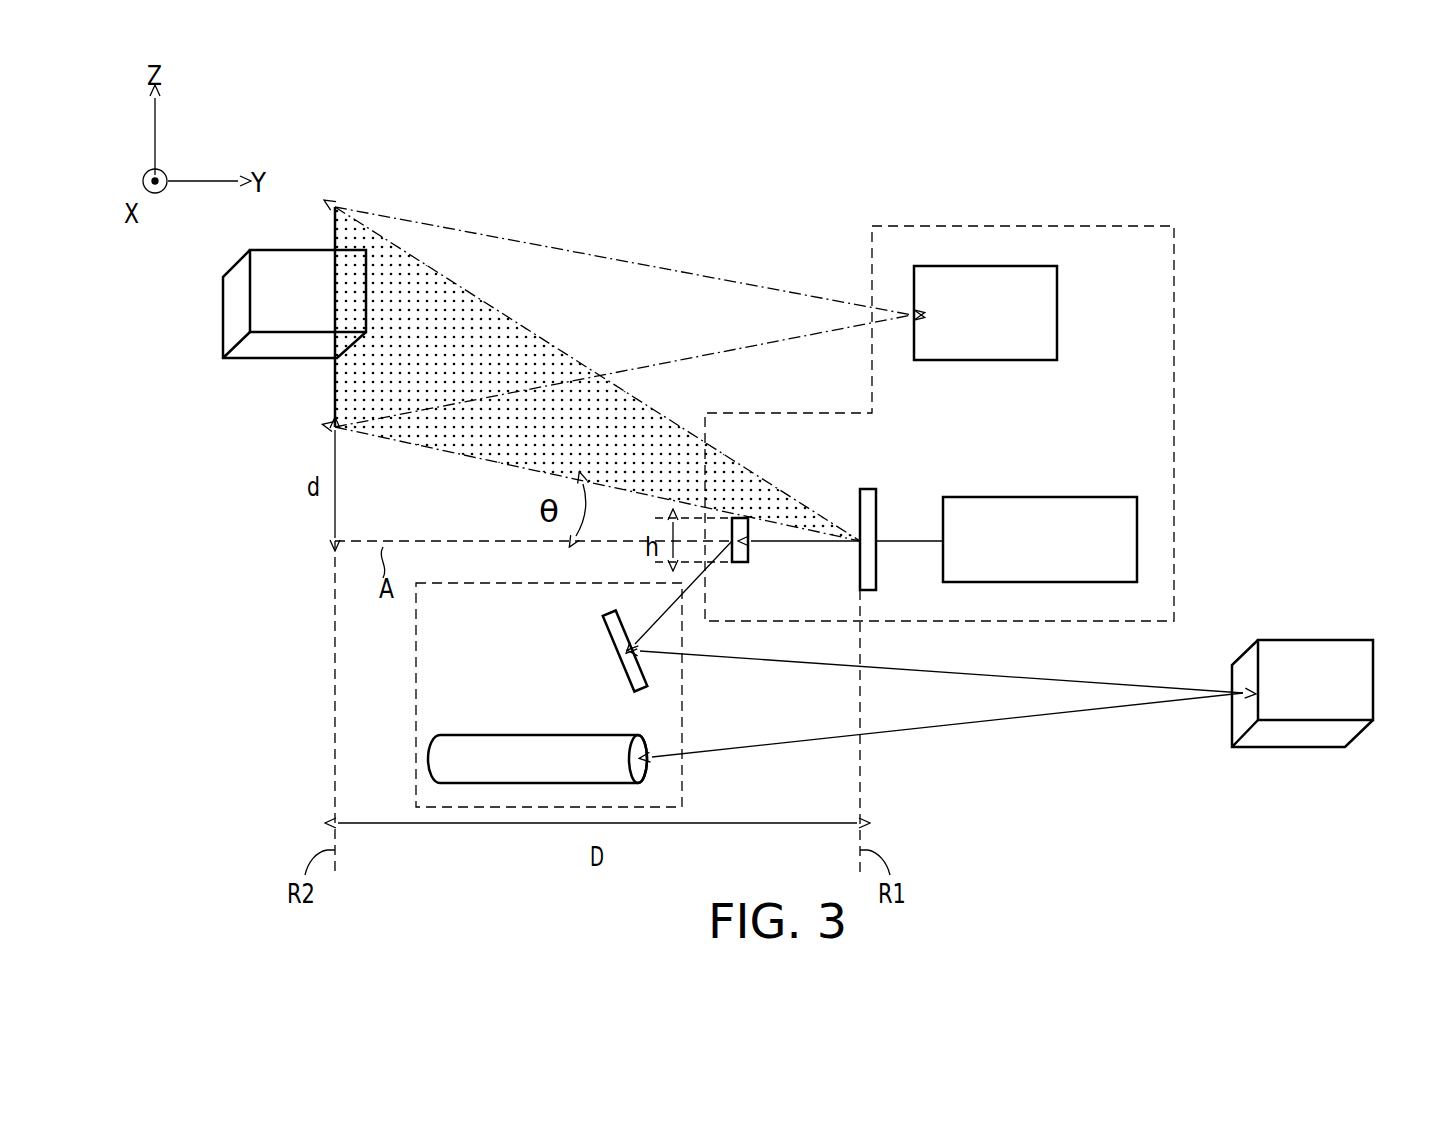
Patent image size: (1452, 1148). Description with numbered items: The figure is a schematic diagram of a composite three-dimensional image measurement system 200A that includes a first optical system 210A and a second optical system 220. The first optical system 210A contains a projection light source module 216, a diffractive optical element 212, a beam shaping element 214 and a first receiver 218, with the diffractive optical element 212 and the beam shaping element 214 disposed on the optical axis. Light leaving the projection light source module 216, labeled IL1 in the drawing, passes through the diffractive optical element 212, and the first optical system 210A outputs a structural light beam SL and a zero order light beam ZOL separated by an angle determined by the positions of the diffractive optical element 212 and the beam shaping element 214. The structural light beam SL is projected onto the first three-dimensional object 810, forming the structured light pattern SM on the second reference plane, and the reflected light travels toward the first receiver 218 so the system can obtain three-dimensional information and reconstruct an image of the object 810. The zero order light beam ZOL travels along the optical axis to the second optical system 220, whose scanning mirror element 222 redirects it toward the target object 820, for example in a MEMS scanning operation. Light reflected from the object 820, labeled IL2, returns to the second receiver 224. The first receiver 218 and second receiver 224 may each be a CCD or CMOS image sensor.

The 3D image measurement system 200A is at (1400, 882).
The first optical system 210A is at (1176, 430).
The diffractive optical element 212 is at (866, 488).
The beam shaping element 214 is at (740, 564).
The projection light source module 216 is at (1055, 497).
The first receiver 218 is at (1058, 313).
The second optical system 220 is at (415, 705).
The scanning mirror element 222 is at (620, 661).
The second receiver 224 is at (520, 735).
The 3D object 810 is at (236, 311).
The 3D object 820 is at (1352, 680).
The structured light pattern SM is at (331, 235).
The structural light beam SL is at (636, 413).
The first invisible light IL1 is at (920, 540).
The second invisible light IL2 is at (1060, 680).
The zero order light beam ZOL is at (804, 543).